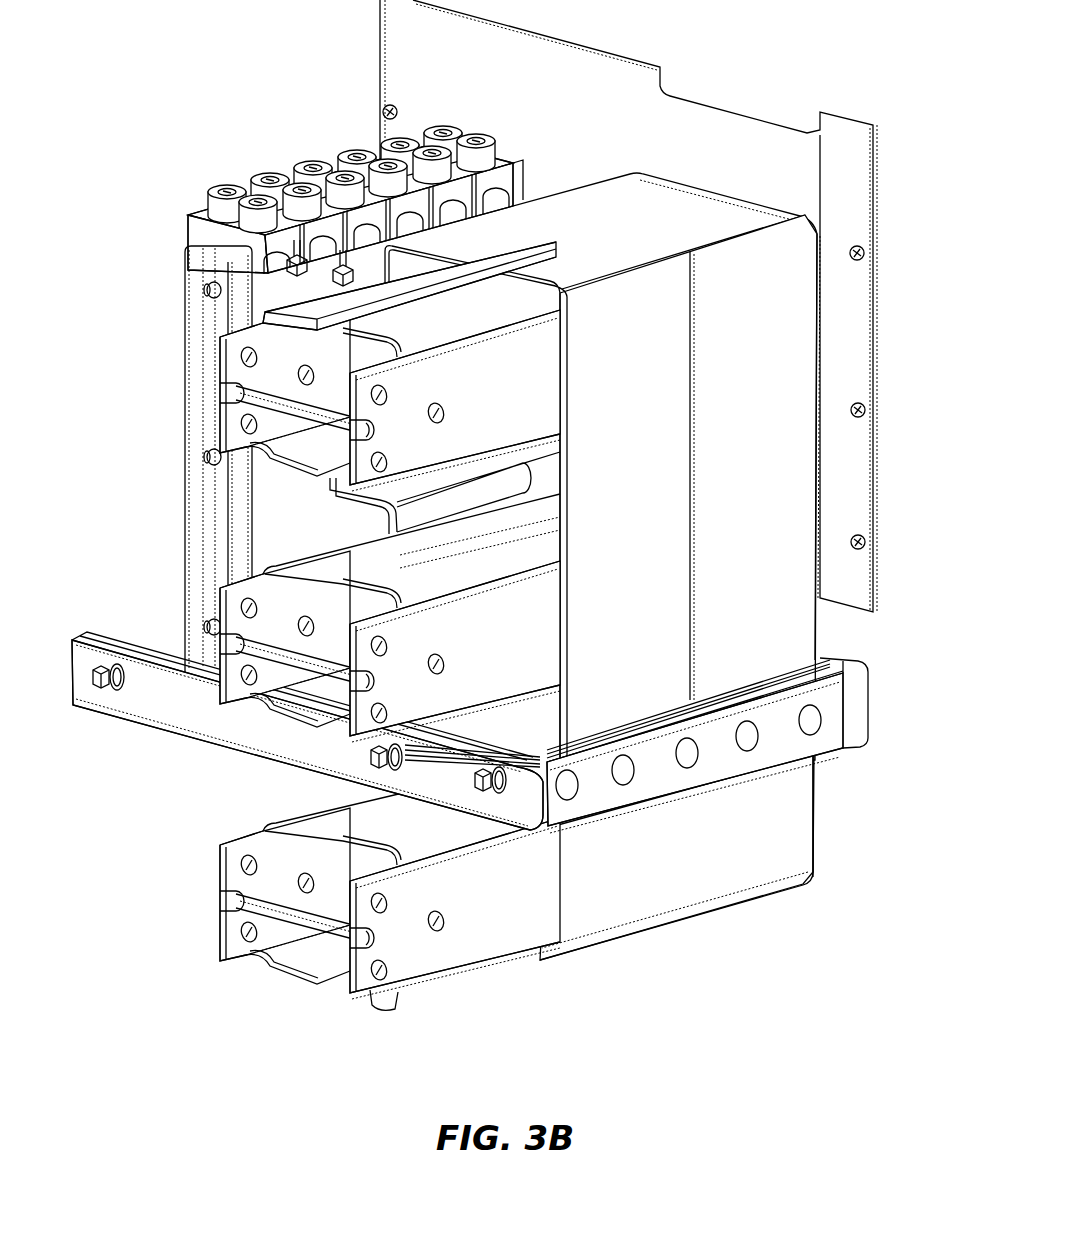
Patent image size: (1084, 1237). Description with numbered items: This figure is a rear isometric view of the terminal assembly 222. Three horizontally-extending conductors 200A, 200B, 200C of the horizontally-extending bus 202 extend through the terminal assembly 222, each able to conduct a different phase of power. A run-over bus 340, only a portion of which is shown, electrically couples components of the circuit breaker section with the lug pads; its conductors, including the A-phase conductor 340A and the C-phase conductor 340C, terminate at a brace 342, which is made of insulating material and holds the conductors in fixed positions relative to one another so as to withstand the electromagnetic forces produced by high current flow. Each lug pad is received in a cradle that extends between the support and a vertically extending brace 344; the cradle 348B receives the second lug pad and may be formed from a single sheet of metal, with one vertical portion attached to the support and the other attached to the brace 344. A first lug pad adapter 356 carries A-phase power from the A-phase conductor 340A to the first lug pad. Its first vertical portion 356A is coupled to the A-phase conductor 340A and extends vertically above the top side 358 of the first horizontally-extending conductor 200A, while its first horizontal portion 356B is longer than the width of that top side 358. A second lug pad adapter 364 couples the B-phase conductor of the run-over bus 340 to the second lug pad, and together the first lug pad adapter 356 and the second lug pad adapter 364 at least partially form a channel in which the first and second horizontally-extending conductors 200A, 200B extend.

The terminal assembly 222 is at (325, 48).
The first horizontally-extending conductor 200A is at (210, 350).
The second horizontally-extending conductor 200B is at (217, 597).
The third horizontally-extending conductor 200C is at (440, 995).
The horizontally-extending bus 202 is at (397, 1024).
The run-over bus 340 is at (856, 655).
The A-phase conductor 340A is at (826, 748).
The C-phase conductor 340C is at (165, 632).
The brace 342 is at (178, 740).
The brace 344 is at (183, 407).
The cradle 348B is at (260, 483).
The first lug pad adapter 356 is at (801, 453).
The first vertical portion 356A is at (818, 313).
The first horizontal portion 356B is at (731, 197).
The top side 358 is at (310, 316).
The second lug pad adapter 364 is at (354, 514).